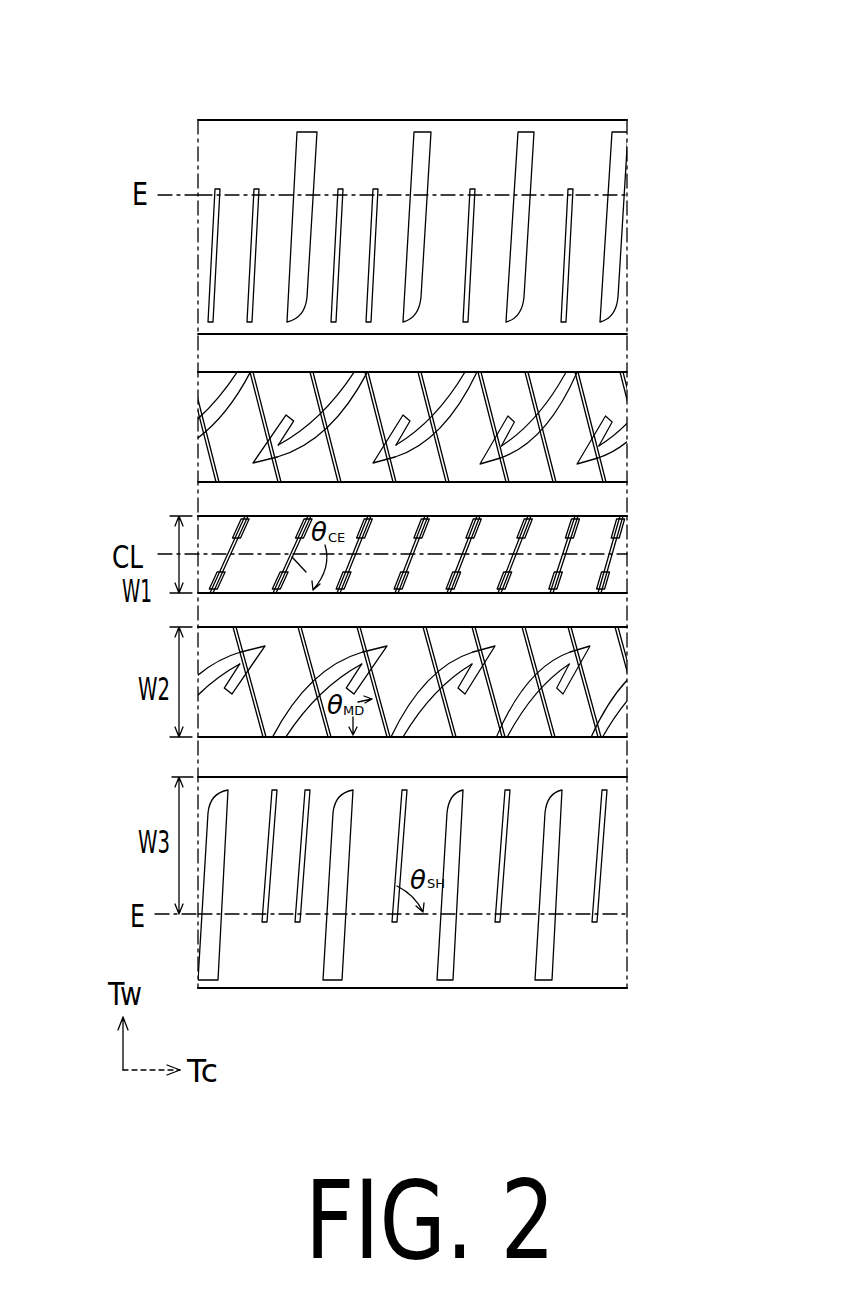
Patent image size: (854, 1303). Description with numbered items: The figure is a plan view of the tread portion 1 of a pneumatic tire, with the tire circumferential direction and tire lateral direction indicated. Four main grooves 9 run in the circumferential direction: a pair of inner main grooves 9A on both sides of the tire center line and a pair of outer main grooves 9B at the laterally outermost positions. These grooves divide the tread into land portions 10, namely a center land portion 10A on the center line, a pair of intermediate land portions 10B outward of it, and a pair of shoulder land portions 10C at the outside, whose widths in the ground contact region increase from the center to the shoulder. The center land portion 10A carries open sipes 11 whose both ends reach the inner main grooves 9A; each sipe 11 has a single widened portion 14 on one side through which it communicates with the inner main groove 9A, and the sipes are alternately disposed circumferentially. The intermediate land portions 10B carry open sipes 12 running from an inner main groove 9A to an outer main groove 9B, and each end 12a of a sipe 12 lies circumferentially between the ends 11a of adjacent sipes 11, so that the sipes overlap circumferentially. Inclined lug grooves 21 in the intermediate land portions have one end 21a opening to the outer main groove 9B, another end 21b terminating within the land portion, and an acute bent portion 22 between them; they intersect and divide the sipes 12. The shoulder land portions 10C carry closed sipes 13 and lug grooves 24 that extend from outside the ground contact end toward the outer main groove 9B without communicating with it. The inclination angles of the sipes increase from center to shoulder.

The tread portion 1 is at (410, 97).
The main groove 9 is at (473, 555).
The inner main groove 9A is at (610, 498).
The outer main groove 9B is at (610, 352).
The land portion 10 is at (490, 554).
The center land portion 10A is at (449, 551).
The intermediate land portion 10B is at (563, 427).
The shoulder land portion 10C is at (583, 283).
The sipe 11 is at (455, 573).
The end of sipe 11a is at (397, 594).
The sipe 12 is at (447, 556).
The end of sipe 12a is at (440, 682).
The sipe 13 is at (568, 238).
The widened portion 14 is at (293, 515).
The lug groove 21 is at (396, 531).
The one end of lug groove 21a is at (389, 531).
The other end of lug groove 21b is at (357, 413).
The acute bent portion 22 is at (262, 447).
The lug groove 24 is at (523, 165).